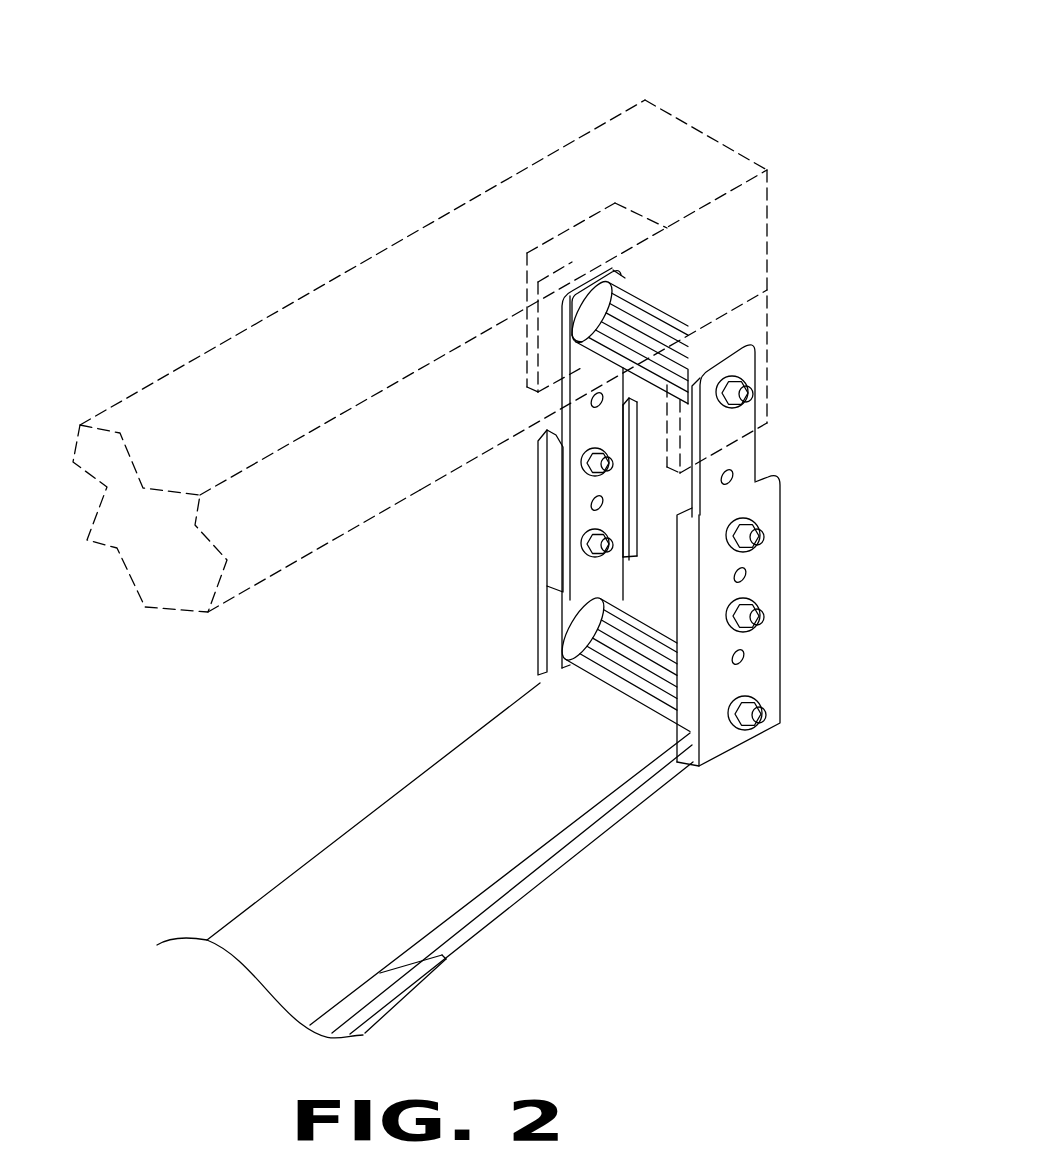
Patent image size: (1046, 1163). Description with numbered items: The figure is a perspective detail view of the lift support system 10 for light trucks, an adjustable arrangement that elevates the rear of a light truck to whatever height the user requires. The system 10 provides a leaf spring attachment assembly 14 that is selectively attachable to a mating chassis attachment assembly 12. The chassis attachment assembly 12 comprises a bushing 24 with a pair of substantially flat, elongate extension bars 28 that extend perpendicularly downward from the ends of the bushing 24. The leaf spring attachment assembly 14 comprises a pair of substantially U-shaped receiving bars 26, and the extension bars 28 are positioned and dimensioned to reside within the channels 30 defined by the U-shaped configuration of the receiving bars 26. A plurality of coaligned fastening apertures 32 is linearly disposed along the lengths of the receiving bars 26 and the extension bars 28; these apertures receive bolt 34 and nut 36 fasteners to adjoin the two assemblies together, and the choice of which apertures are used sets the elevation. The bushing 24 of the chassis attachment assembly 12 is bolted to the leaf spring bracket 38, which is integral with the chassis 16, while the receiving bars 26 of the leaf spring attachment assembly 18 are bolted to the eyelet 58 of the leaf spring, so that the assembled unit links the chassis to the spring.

The lift support system 10 is at (772, 113).
The chassis attachment assembly 12 is at (765, 340).
The leaf spring attachment assembly 14 is at (795, 525).
The chassis 16 is at (280, 568).
The leaf spring attachment assembly 18 is at (508, 878).
The bushing 24 is at (655, 320).
The receiving bars 26 is at (783, 578).
The extension bars 28 is at (560, 393).
The channels 30 is at (555, 450).
The fastening apertures 32 is at (597, 505).
The bolt 34 is at (753, 713).
The nut 36 is at (598, 548).
The leaf spring bracket 38 is at (503, 180).
The eyelet 58 is at (635, 683).